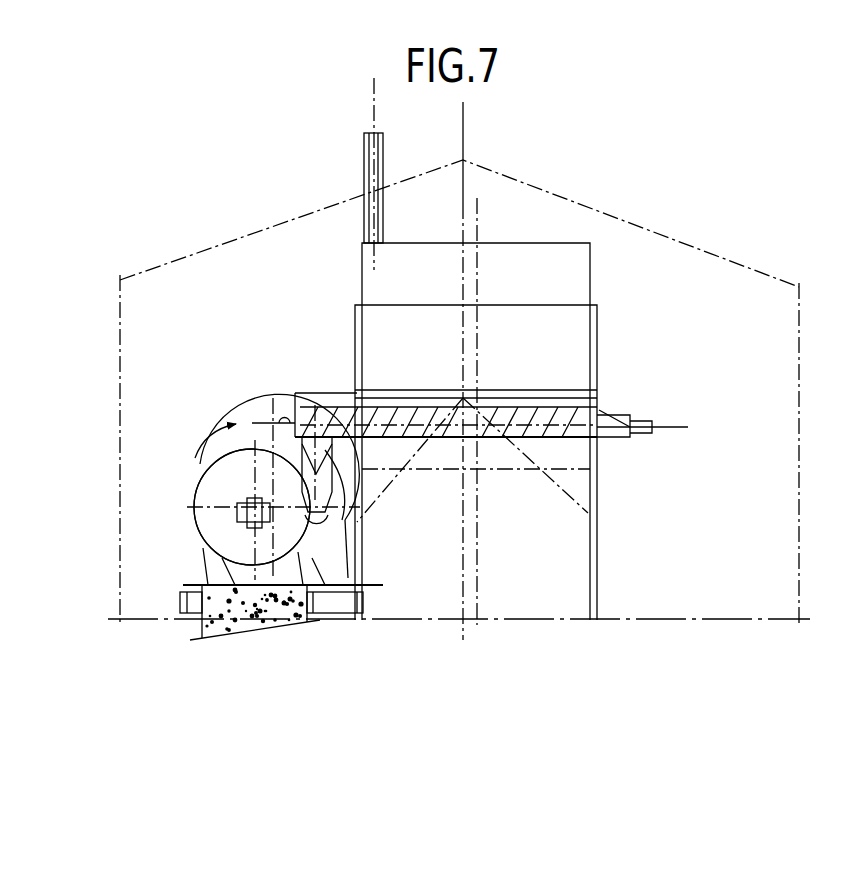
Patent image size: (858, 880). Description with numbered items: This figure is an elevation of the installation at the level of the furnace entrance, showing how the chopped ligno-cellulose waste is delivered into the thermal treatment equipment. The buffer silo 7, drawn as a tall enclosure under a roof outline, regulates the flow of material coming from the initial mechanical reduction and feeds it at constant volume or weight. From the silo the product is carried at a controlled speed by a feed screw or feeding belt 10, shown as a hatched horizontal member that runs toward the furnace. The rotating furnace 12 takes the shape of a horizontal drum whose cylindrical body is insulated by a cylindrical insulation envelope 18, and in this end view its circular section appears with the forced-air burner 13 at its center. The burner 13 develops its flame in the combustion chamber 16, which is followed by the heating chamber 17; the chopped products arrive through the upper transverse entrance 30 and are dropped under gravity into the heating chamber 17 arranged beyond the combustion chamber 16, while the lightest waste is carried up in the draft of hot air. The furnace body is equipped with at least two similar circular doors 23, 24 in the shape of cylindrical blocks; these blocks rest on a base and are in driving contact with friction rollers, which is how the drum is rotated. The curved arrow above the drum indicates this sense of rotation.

The buffer silo 7 is at (610, 348).
The feeding belt 10 is at (450, 442).
The rotating furnace 12 is at (262, 422).
The forced-air burner 13 is at (240, 530).
The combustion chamber 16 is at (222, 500).
The heating chamber 17 is at (259, 517).
The cylindrical insulation envelope 18 is at (340, 540).
The upper transverse entrance 30 is at (345, 512).
The circular door 23 is at (200, 578).
The circular door 24 is at (336, 600).